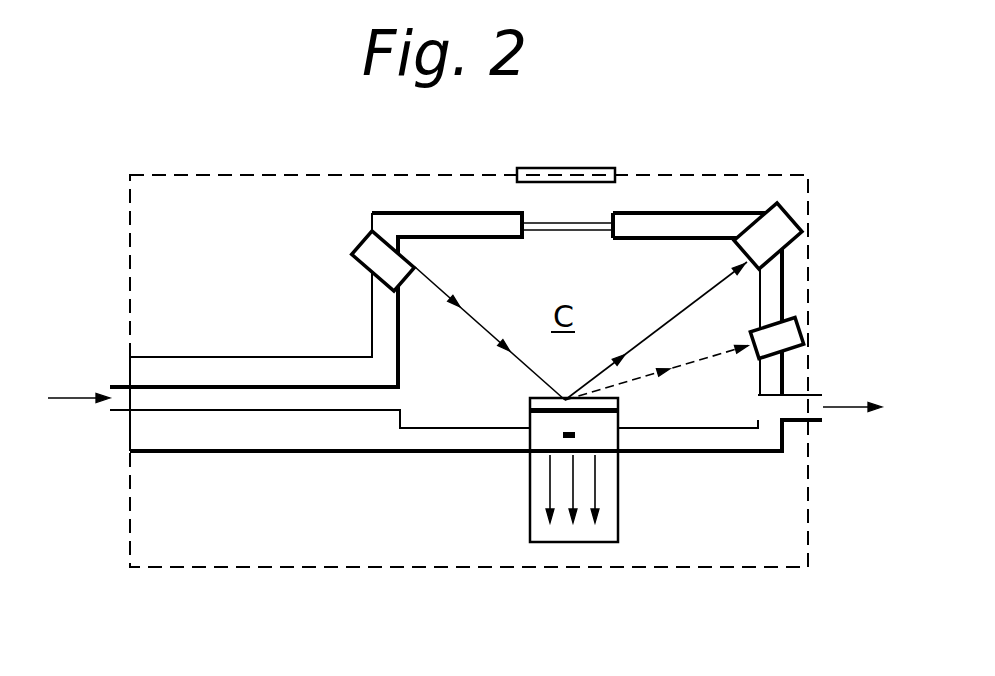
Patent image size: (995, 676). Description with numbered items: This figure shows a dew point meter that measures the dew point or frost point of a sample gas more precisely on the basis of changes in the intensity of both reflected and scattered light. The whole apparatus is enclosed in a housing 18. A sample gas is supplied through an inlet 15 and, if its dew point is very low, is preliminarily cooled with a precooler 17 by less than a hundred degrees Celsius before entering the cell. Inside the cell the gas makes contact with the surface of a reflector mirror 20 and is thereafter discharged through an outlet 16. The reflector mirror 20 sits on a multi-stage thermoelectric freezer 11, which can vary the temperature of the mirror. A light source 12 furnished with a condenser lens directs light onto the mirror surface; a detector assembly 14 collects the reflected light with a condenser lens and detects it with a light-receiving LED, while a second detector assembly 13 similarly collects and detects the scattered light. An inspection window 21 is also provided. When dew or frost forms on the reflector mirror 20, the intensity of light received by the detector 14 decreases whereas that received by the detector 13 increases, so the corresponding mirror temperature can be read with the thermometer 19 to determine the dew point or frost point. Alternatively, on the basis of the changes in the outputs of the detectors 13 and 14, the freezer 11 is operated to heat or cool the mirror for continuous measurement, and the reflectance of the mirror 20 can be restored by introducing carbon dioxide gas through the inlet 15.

The multi-stage thermoelectric freezer 11 is at (562, 545).
The light source 12 is at (352, 253).
The detector assembly 13 is at (787, 342).
The detector assembly 14 is at (787, 232).
The inlet 15 is at (70, 417).
The outlet 16 is at (854, 428).
The precooler 17 is at (258, 452).
The housing 18 is at (735, 570).
The thermometer 19 is at (575, 435).
The reflector mirror 20 is at (562, 412).
The inspection window 21 is at (563, 227).